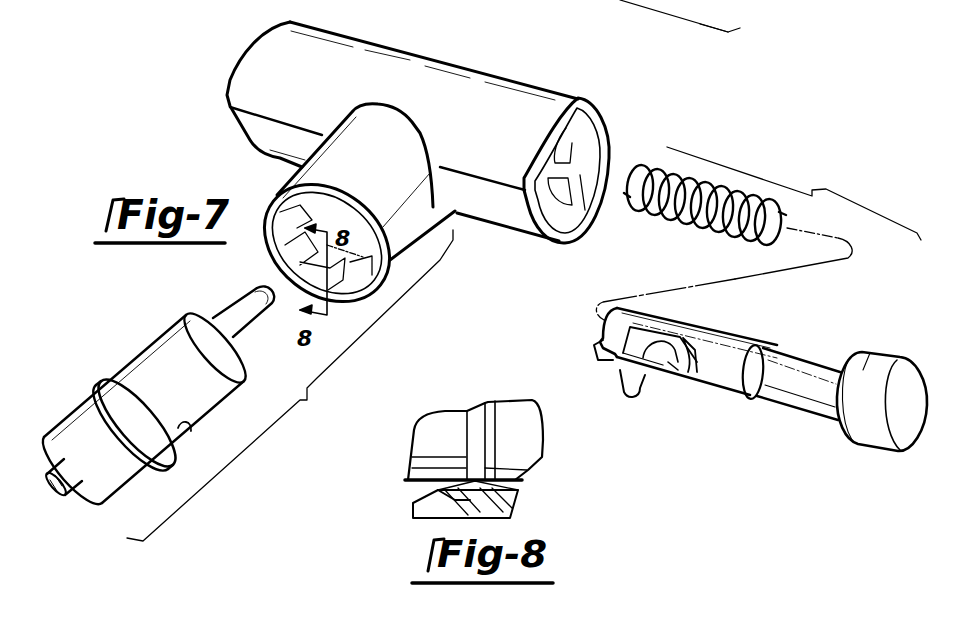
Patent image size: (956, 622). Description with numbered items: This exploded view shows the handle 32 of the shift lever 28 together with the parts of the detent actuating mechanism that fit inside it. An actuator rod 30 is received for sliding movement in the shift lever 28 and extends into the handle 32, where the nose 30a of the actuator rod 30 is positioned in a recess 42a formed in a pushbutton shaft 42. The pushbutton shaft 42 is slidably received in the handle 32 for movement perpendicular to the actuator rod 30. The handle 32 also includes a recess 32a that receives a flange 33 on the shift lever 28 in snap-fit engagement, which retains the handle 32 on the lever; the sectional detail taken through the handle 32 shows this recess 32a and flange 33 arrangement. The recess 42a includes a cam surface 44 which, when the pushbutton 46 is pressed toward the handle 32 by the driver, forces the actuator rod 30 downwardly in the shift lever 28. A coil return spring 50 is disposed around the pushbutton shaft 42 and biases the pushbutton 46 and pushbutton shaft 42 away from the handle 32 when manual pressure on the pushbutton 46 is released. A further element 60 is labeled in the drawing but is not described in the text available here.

In FIG. 7, the shift lever 28 is at (87, 403).
In FIG. 7, the actuator rod 30 is at (82, 492).
In FIG. 7, the nose 30a is at (245, 307).
In FIG. 7, the handle 32 is at (353, 60).
In FIG. 8, the handle 32 is at (520, 510).
In FIG. 8, the recess 32a is at (519, 512).
In FIG. 7, the flange 33 is at (189, 429).
In FIG. 8, the flange 33 is at (448, 487).
In FIG. 7, the pushbutton shaft 42 is at (727, 352).
In FIG. 7, the recess 42a is at (612, 366).
In FIG. 7, the cam surface 44 is at (687, 365).
In FIG. 7, the pushbutton 46 is at (862, 440).
In FIG. 7, the coil return spring 50 is at (690, 225).
In FIG. 7, the rail 60 is at (750, 0).